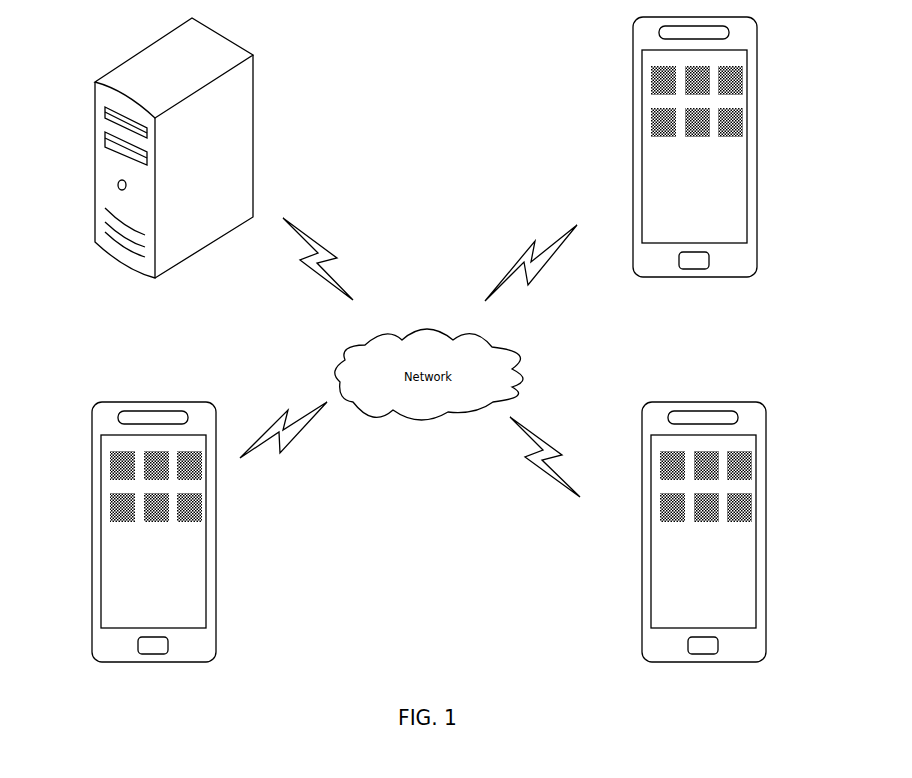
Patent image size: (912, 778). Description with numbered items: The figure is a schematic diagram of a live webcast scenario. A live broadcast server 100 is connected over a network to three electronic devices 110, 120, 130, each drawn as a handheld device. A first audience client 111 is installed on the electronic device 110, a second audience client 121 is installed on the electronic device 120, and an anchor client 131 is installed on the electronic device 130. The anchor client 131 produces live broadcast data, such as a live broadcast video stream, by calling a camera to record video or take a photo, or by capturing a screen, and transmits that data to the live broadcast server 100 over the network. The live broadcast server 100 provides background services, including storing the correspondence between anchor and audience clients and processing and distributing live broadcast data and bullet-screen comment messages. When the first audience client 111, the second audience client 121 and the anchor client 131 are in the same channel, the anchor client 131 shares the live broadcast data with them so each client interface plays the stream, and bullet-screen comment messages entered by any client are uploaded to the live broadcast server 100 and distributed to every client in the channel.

The live broadcast server 100 is at (242, 102).
The electronic device 110 is at (700, 147).
The first audience client 111 is at (648, 123).
The electronic device 120 is at (706, 532).
The second audience client 121 is at (657, 512).
The electronic device 130 is at (155, 532).
The anchor client 131 is at (105, 502).